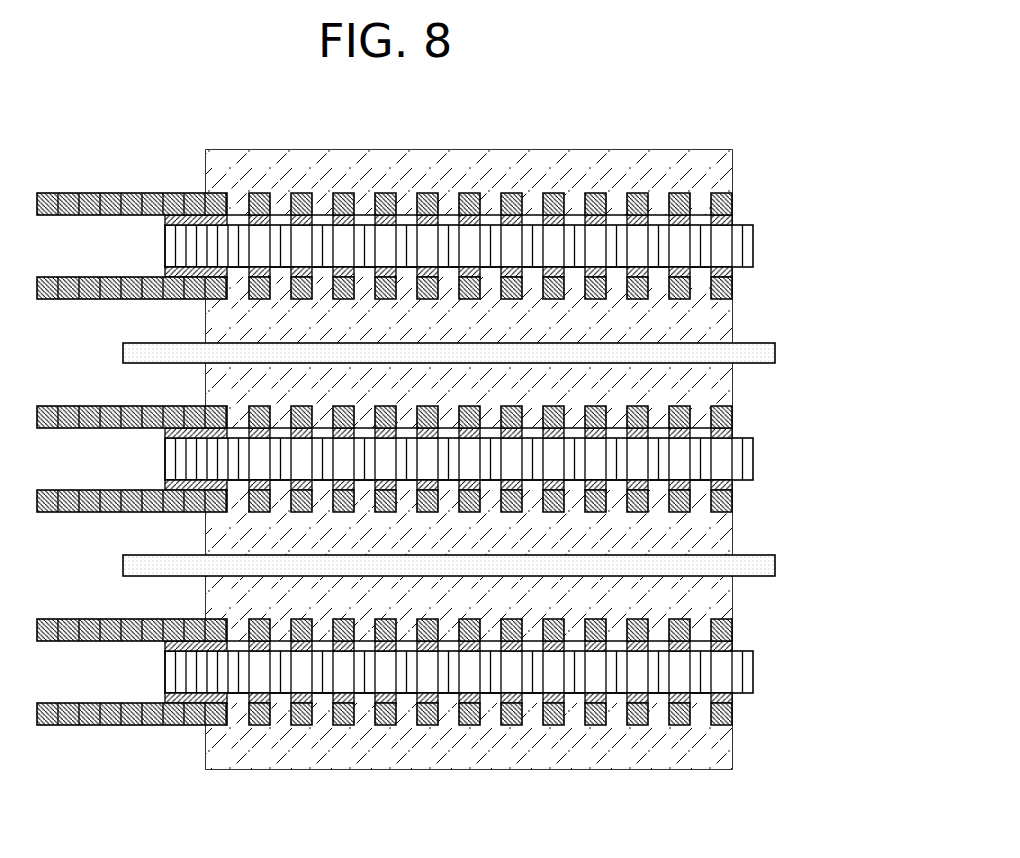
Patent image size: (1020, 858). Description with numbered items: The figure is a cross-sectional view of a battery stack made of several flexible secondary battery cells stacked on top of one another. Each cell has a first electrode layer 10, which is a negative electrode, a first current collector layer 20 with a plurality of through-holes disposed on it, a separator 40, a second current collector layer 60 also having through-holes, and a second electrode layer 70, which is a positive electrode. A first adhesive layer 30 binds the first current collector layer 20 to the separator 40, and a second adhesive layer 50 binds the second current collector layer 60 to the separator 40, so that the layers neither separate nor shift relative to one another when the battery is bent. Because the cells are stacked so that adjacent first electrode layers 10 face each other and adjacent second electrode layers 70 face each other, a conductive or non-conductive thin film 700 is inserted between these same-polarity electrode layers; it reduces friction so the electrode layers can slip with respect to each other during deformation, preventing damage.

The first electrode layer 10 is at (732, 322).
The first current collector layer 20 is at (732, 293).
The first adhesive layer 30 is at (732, 273).
The separator 40 is at (753, 247).
The second adhesive layer 50 is at (732, 220).
The second current collector layer 60 is at (732, 200).
The second electrode layer 70 is at (732, 172).
The conductive or non-conductive thin film 700 is at (123, 352).